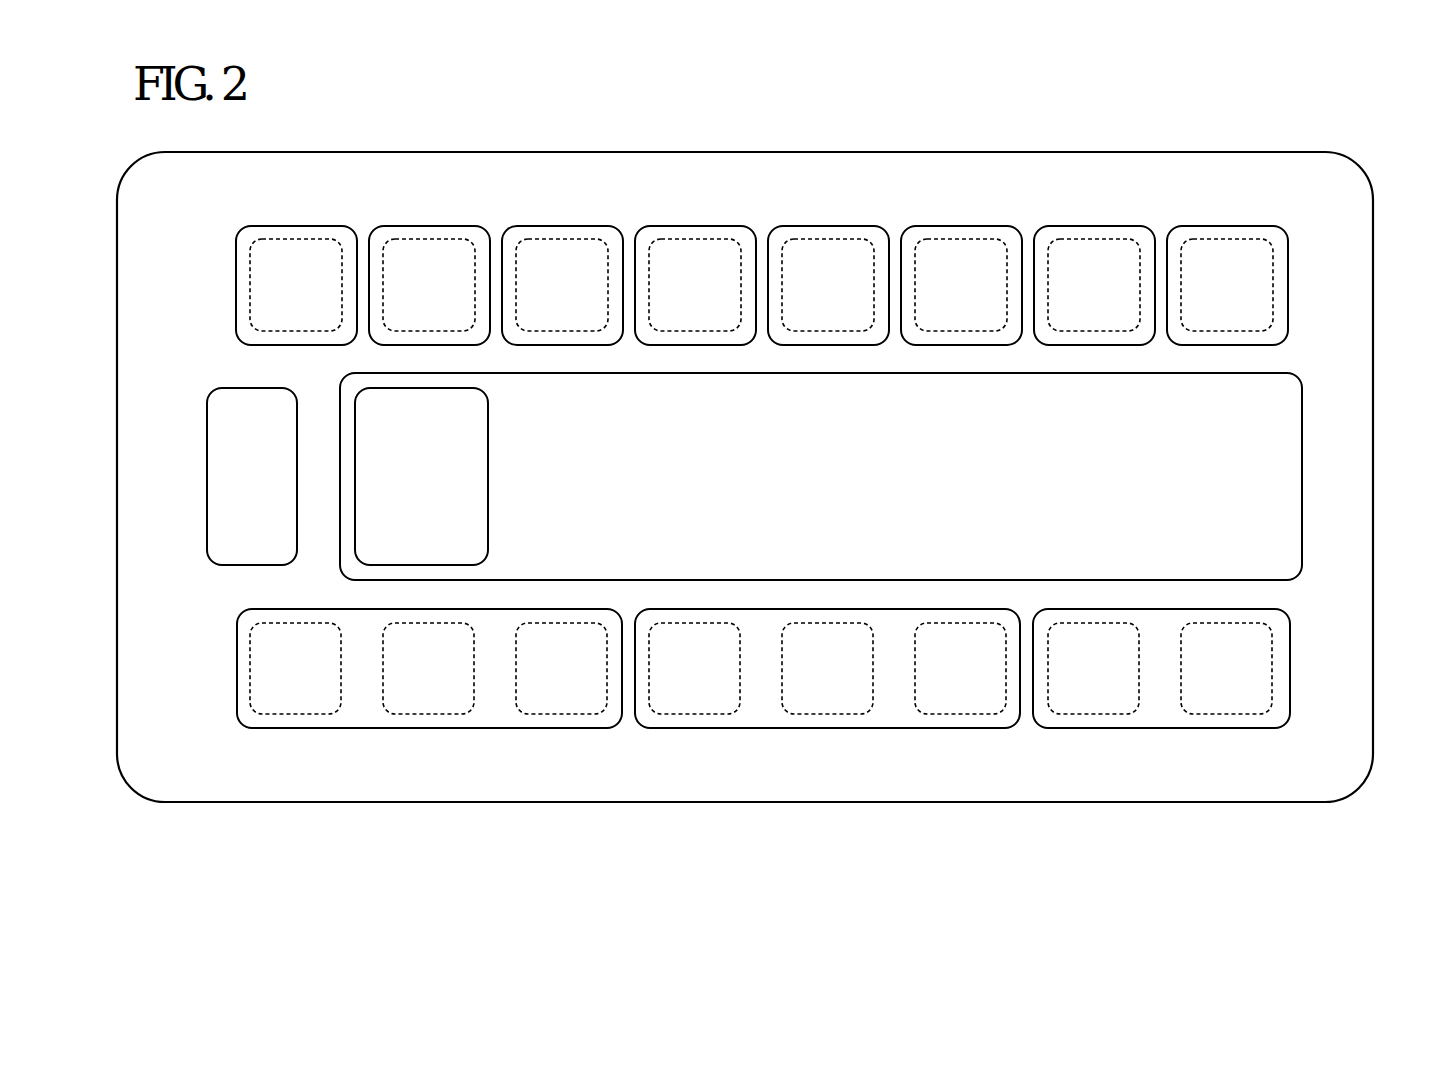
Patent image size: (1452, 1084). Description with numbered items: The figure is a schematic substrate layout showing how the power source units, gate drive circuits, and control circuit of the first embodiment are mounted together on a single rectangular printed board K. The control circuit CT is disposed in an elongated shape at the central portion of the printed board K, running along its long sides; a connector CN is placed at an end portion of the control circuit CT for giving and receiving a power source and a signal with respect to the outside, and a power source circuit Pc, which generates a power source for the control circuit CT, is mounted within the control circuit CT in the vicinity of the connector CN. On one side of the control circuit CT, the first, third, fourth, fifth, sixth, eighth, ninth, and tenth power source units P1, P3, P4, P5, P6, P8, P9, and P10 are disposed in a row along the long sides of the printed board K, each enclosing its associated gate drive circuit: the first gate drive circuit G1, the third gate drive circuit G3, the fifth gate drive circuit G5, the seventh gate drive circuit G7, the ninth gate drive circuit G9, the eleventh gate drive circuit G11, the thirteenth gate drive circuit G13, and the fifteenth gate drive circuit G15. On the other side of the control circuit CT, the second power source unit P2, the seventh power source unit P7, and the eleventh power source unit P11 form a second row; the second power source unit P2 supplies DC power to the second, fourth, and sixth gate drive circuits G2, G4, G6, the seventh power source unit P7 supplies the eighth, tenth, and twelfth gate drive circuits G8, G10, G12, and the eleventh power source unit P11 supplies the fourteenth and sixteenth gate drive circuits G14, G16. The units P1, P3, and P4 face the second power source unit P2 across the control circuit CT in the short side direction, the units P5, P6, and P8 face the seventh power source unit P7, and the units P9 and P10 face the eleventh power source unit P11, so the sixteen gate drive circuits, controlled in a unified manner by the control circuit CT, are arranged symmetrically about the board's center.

The printed board K is at (1373, 637).
The control circuit CT is at (1302, 476).
The connector CN is at (207, 477).
The power source circuit Pc is at (488, 477).
The first power source unit P1 is at (320, 226).
The second power source unit P2 is at (237, 666).
The third power source unit P3 is at (453, 226).
The fourth power source unit P4 is at (586, 226).
The fifth power source unit P5 is at (719, 226).
The sixth power source unit P6 is at (852, 226).
The seventh power source unit P7 is at (748, 728).
The eighth power source unit P8 is at (985, 226).
The ninth power source unit P9 is at (1118, 226).
The tenth power source unit P10 is at (1251, 226).
The eleventh power source unit P11 is at (1253, 728).
The first gate drive circuit G1 is at (283, 240).
The second gate drive circuit G2 is at (295, 714).
The third gate drive circuit G3 is at (416, 240).
The fourth gate drive circuit G4 is at (428, 714).
The fifth gate drive circuit G5 is at (549, 240).
The sixth gate drive circuit G6 is at (561, 714).
The seventh gate drive circuit G7 is at (682, 240).
The eighth gate drive circuit G8 is at (694, 714).
The ninth gate drive circuit G9 is at (815, 240).
The tenth gate drive circuit G10 is at (827, 714).
The eleventh gate drive circuit G11 is at (948, 240).
The twelfth gate drive circuit G12 is at (960, 714).
The thirteenth gate drive circuit G13 is at (1081, 240).
The fourteenth gate drive circuit G14 is at (1093, 714).
The fifteenth gate drive circuit G15 is at (1214, 240).
The sixteenth gate drive circuit G16 is at (1207, 714).